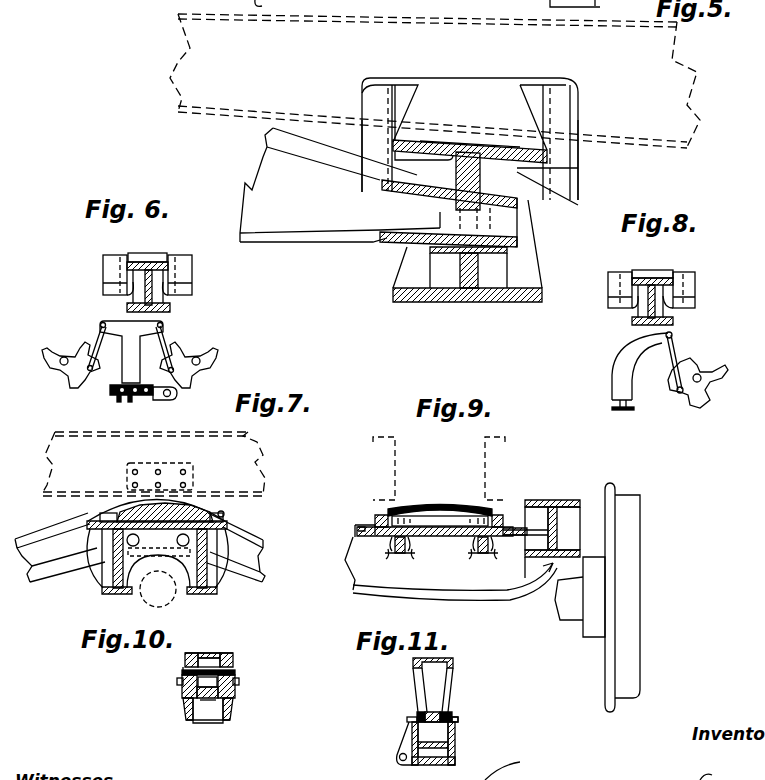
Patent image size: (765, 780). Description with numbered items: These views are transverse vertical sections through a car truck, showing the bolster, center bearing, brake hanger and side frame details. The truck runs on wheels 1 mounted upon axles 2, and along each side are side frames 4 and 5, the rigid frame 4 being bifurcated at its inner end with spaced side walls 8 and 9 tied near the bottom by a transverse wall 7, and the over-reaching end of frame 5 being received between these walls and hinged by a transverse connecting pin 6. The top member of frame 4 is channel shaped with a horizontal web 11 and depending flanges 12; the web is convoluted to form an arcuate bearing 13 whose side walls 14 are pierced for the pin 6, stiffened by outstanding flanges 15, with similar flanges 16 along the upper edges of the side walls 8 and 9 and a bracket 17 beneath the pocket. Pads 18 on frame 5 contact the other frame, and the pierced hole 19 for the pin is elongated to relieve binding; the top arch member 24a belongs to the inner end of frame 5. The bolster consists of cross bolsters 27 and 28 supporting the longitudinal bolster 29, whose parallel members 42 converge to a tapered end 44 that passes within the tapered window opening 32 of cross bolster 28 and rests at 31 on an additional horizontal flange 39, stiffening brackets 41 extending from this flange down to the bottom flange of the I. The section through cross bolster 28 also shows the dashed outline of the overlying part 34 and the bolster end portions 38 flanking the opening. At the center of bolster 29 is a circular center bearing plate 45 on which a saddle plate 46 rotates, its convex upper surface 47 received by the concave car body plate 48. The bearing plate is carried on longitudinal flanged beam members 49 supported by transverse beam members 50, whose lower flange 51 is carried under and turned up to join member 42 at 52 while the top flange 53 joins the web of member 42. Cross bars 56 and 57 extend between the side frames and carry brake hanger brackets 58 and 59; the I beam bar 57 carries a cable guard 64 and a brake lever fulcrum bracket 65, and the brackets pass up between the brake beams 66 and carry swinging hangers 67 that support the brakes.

In FIG. 9, the wheels 1 is at (623, 535).
In FIG. 9, the axles 2 is at (567, 607).
In FIG. 10, the side frame 4 is at (233, 715).
In FIG. 11, the side frame 4 is at (455, 747).
In FIG. 10, the side frame 5 is at (207, 655).
In FIG. 11, the side frame 5 is at (415, 663).
In FIG. 10, the transverse connecting pins 6 is at (183, 672).
In FIG. 11, the transverse wall 7 is at (417, 735).
In FIG. 11, the side wall 8 is at (458, 718).
In FIG. 11, the side wall 9 is at (418, 715).
In FIG. 10, the horizontal web 11 is at (207, 713).
In FIG. 10, the vertical depending flanges 12 is at (225, 700).
In FIG. 10, the arcuate bearing 13 is at (182, 697).
In FIG. 10, the side walls 14 is at (185, 657).
In FIG. 10, the outstanding flanges 15 is at (177, 682).
In FIG. 11, the outstanding flanges 16 is at (408, 718).
In FIG. 10, the bracket 17 is at (203, 713).
In FIG. 11, the pads 18 is at (448, 717).
In FIG. 10, the pierced hole 19 is at (235, 673).
In FIG. 10, the top arch member 24a is at (227, 655).
In FIG. 11, the top arch member 24a is at (452, 672).
In FIG. 6, the cross bolster 27 is at (152, 257).
In FIG. 5, the cross bolster 28 is at (475, 82).
In FIG. 8, the cross bolster 28 is at (663, 272).
In FIG. 5, the longitudinal bolster 29 is at (330, 130).
In FIG. 7, the longitudinal bolster 29 is at (57, 543).
In FIG. 9, the longitudinal bolster 29 is at (535, 515).
In FIG. 5, the resting point 31 is at (520, 247).
In FIG. 5, the window opening 32 is at (522, 198).
In FIG. 5, the plate 34 is at (617, 126).
In FIG. 7, the plate 34 is at (243, 445).
In FIG. 9, the plate 34 is at (395, 440).
In FIG. 5, the tube 38 is at (412, 95).
In FIG. 5, the horizontal flange 39 is at (430, 245).
In FIG. 5, the stiffening brackets 41 is at (450, 272).
In FIG. 7, the parallel members 42 is at (70, 572).
In FIG. 9, the parallel members 42 is at (562, 500).
In FIG. 5, the tapered end 44 is at (503, 138).
In FIG. 7, the center bearing plate 45 is at (219, 511).
In FIG. 9, the center bearing plate 45 is at (377, 517).
In FIG. 7, the saddle plate 46 is at (120, 503).
In FIG. 9, the saddle plate 46 is at (423, 510).
In FIG. 7, the upper surface 47 is at (173, 508).
In FIG. 9, the upper surface 47 is at (453, 512).
In FIG. 7, the plate 48 is at (127, 486).
In FIG. 9, the flanged beam members 49 is at (402, 554).
In FIG. 7, the flanged beam members 50 is at (120, 565).
In FIG. 9, the flanged beam members 50 is at (418, 585).
In FIG. 7, the lower flange 51 is at (197, 593).
In FIG. 9, the lower flange 51 is at (507, 593).
In FIG. 9, the joint 52 is at (540, 563).
In FIG. 9, the top flange 53 is at (512, 528).
In FIG. 8, the cross bar 56 is at (613, 403).
In FIG. 6, the cross bar 57 is at (110, 390).
In FIG. 8, the brake hanger bracket 58 is at (623, 360).
In FIG. 6, the brake hanger bracket 59 is at (130, 328).
In FIG. 6, the cable guard 64 is at (123, 401).
In FIG. 6, the bracket 65 is at (163, 400).
In FIG. 6, the beams 66 is at (54, 366).
In FIG. 8, the beams 66 is at (703, 362).
In FIG. 6, the swinging hangers 67 is at (98, 336).
In FIG. 8, the swinging hangers 67 is at (674, 345).